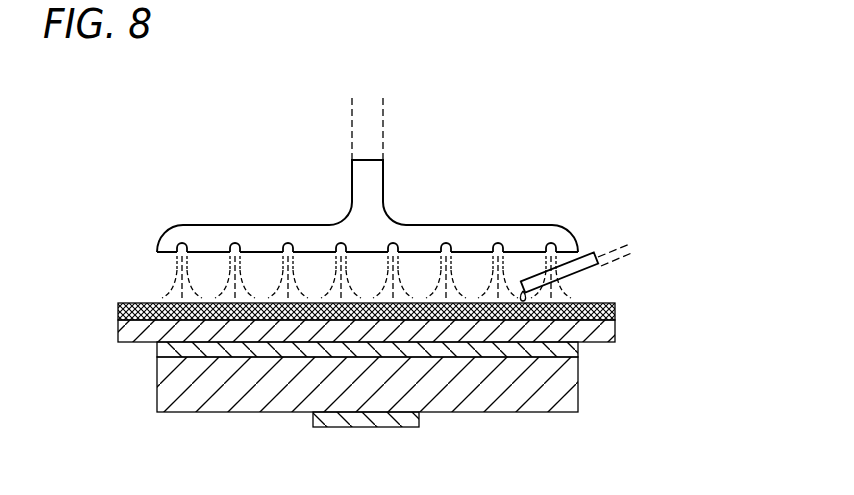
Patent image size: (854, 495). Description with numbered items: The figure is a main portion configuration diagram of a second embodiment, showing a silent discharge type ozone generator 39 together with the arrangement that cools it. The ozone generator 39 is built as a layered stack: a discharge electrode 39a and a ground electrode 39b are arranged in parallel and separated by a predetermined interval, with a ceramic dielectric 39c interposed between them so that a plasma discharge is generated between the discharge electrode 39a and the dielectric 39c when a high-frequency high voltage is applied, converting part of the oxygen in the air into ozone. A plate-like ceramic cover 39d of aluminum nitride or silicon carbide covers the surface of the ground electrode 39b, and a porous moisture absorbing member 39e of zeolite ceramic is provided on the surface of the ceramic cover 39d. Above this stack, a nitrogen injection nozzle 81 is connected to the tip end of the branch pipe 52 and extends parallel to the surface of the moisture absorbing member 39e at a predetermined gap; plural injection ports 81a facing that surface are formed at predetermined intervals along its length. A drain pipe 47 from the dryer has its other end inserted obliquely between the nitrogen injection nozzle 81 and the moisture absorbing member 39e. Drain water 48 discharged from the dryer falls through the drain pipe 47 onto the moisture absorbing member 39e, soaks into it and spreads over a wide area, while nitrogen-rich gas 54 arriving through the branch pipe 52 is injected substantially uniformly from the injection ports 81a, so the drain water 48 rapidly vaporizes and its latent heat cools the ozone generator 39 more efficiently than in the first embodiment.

The ozone generator 39 is at (414, 338).
The discharge electrode 39a is at (377, 428).
The ground electrode 39b is at (578, 350).
The dielectric 39c is at (578, 385).
The ceramic cover 39d is at (616, 330).
The moisture absorbing member 39e is at (616, 310).
The drain pipe 47 is at (578, 282).
The drain water 48 is at (510, 262).
The branch pipe 52 is at (351, 192).
The nitrogen-rich gas 54 is at (173, 276).
The nitrogen injection nozzle 81 is at (367, 167).
The injection ports 81a is at (187, 253).